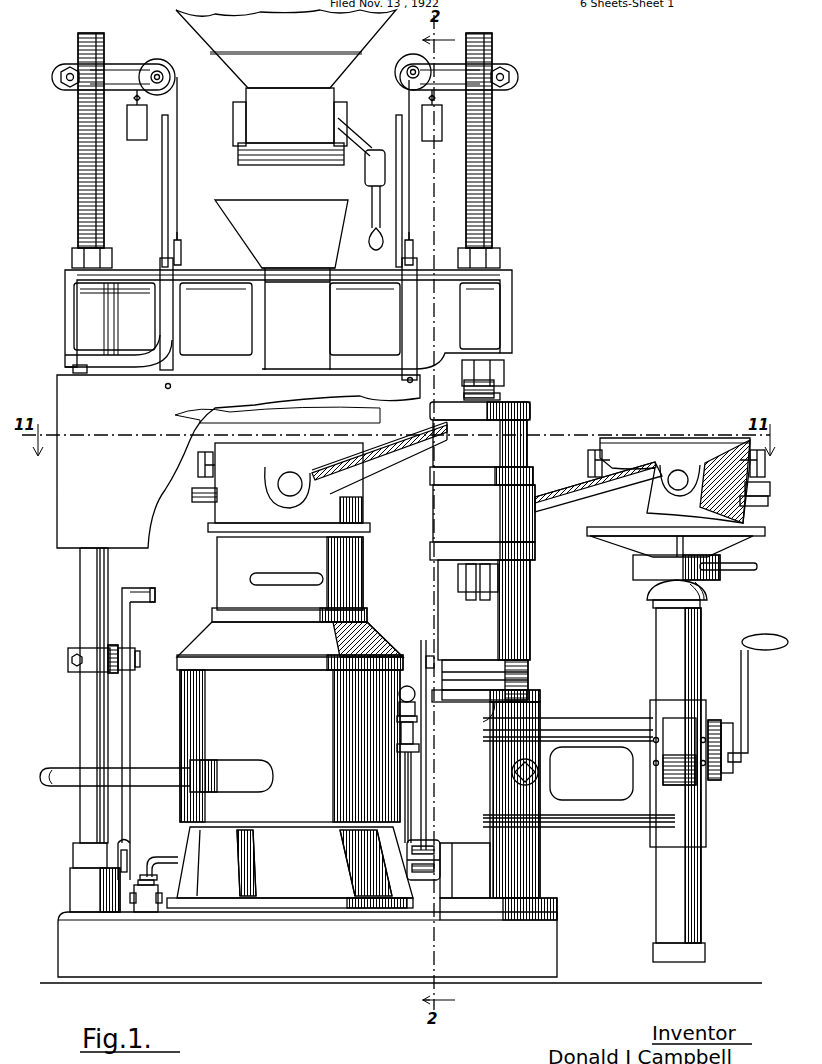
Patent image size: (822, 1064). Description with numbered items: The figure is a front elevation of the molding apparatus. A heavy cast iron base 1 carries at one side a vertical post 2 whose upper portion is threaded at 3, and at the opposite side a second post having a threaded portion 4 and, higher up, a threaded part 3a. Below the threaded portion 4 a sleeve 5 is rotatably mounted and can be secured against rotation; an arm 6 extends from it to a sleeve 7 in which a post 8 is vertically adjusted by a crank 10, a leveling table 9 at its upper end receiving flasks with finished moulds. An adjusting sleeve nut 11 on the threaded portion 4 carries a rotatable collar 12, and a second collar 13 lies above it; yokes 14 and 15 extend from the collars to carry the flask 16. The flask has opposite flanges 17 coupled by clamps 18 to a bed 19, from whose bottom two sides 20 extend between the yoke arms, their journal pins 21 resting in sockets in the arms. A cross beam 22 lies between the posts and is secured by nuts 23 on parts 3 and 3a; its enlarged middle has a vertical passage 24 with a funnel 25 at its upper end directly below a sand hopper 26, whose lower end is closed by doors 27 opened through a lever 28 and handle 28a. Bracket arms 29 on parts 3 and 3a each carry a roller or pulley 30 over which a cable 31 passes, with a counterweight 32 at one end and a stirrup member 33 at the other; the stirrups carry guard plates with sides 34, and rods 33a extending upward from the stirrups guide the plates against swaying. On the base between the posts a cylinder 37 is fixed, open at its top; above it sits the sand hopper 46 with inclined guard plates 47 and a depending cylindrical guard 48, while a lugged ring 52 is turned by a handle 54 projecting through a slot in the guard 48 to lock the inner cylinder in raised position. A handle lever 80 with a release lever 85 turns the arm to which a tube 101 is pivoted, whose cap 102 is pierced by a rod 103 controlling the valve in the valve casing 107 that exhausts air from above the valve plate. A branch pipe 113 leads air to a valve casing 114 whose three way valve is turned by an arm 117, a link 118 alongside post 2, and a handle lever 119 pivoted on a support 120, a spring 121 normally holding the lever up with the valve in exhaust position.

The base 1 is at (272, 984).
The post 2 is at (88, 694).
The threaded portion 3 is at (80, 175).
The threaded portion 3a is at (494, 215).
The threaded portion 4 is at (522, 676).
The sleeve 5 is at (473, 813).
The arm 6 is at (603, 808).
The sleeve 7 is at (700, 812).
The post 8 is at (694, 648).
The leveling table 9 is at (744, 536).
The crank 10 is at (748, 730).
The adjusting sleeve nut 11 is at (528, 618).
The collar 12 is at (452, 510).
The second collar 13 is at (528, 442).
The yoke 14 is at (580, 522).
The yoke 15 is at (407, 476).
The flask 16 is at (230, 505).
The flanges 17 is at (218, 498).
The clamps 18 is at (198, 468).
The bed 19 is at (204, 464).
The sides 20 is at (672, 452).
The journal pins 21 is at (686, 478).
The cross beam 22 is at (135, 290).
The nuts 23 is at (73, 255).
The vertical passage 24 is at (305, 340).
The funnel 25 is at (246, 214).
The hopper 26 is at (334, 63).
The movable doors 27 is at (300, 155).
The lever 28 is at (356, 152).
The handle 28a is at (400, 212).
The bracket arms 29 is at (88, 82).
The pulley 30 is at (176, 76).
The cords or cables 31 is at (178, 172).
The counterweights 32 is at (137, 140).
The stirrup members 33 is at (173, 325).
The rods 33a is at (166, 208).
The sides 34 is at (213, 384).
The cylinder 37 is at (282, 857).
The sand holding member or hopper 46 is at (352, 570).
The inclined guard plates 47 is at (364, 642).
The cylindrical guard 48 is at (188, 712).
The ring 52 is at (232, 782).
The handle 54 is at (62, 790).
The handle lever 80 is at (427, 732).
The lever 85 is at (424, 866).
The tube 101 is at (412, 792).
The cap 102 is at (420, 756).
The rod 103 is at (400, 740).
The valve casing 107 is at (399, 694).
The branch 113 is at (163, 860).
The valve casing 114 is at (143, 897).
The arm 117 is at (122, 876).
The link 118 is at (130, 694).
The handle lever 119 is at (130, 606).
The support 120 is at (84, 666).
The spring 121 is at (104, 650).